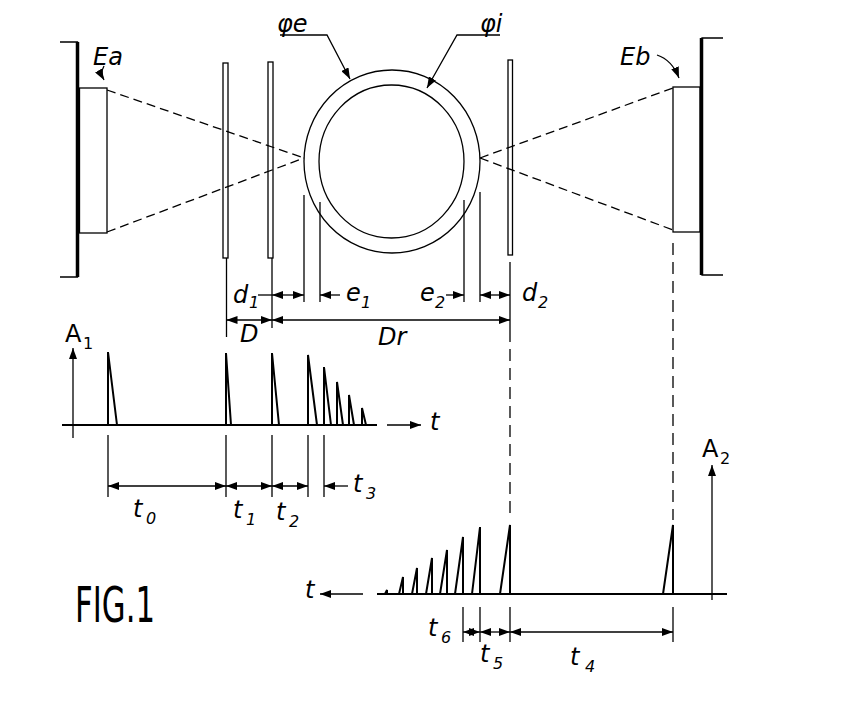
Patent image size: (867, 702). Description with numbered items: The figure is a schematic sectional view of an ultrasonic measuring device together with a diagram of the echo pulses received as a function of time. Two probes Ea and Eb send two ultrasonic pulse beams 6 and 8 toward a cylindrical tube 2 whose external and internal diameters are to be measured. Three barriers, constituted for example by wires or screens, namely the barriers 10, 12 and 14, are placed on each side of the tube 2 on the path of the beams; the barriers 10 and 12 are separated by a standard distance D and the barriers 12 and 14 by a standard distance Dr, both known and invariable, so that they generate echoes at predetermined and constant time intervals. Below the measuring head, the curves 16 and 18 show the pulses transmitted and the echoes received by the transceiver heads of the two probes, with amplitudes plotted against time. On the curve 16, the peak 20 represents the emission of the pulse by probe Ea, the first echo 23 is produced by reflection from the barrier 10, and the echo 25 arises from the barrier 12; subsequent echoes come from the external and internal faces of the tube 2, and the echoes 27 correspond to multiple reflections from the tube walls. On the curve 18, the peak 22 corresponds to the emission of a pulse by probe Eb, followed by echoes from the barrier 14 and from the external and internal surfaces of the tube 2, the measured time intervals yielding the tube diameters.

The cylindrical tube 2 is at (367, 61).
The ultrasonic pulse beam 6 is at (150, 216).
The ultrasonic pulse beam 8 is at (600, 202).
The first barrier 10 is at (222, 212).
The second barrier 12 is at (267, 246).
The third barrier 14 is at (513, 212).
The curve 16 is at (134, 424).
The curve 18 is at (597, 593).
The peak 20 is at (112, 366).
The peak 22 is at (671, 536).
The first echo 23 is at (225, 366).
The echo 25 is at (271, 372).
The echoes 27 is at (347, 373).